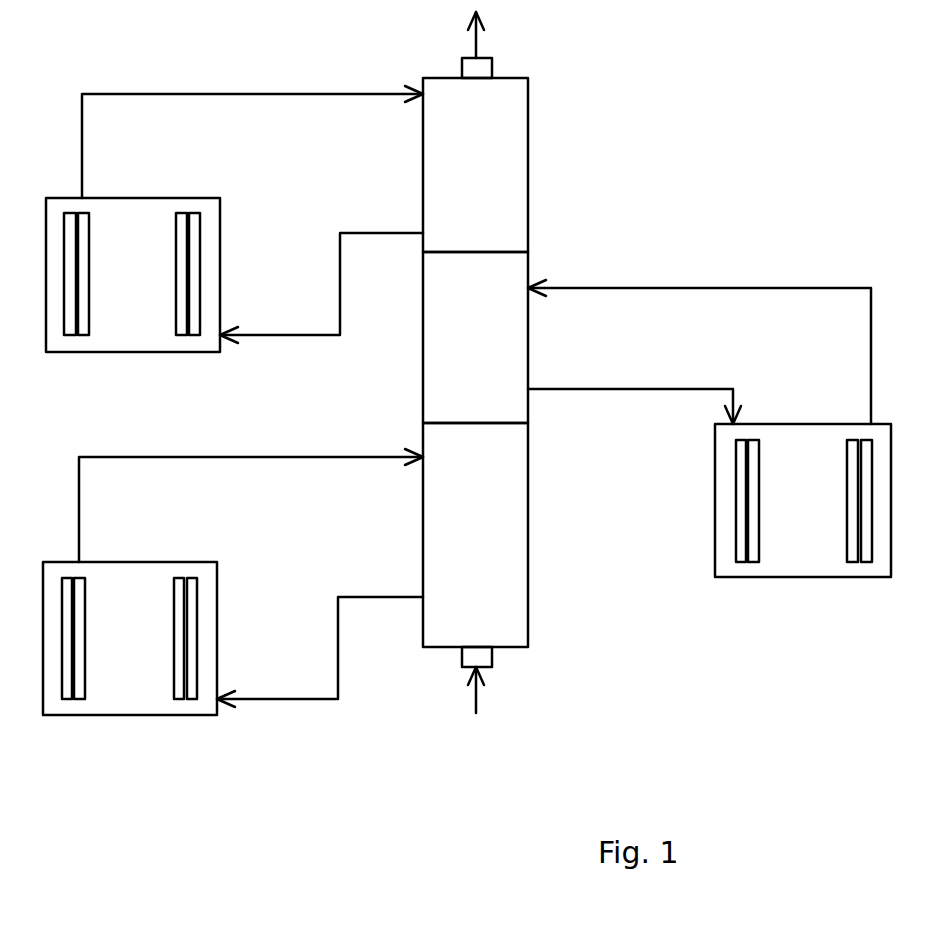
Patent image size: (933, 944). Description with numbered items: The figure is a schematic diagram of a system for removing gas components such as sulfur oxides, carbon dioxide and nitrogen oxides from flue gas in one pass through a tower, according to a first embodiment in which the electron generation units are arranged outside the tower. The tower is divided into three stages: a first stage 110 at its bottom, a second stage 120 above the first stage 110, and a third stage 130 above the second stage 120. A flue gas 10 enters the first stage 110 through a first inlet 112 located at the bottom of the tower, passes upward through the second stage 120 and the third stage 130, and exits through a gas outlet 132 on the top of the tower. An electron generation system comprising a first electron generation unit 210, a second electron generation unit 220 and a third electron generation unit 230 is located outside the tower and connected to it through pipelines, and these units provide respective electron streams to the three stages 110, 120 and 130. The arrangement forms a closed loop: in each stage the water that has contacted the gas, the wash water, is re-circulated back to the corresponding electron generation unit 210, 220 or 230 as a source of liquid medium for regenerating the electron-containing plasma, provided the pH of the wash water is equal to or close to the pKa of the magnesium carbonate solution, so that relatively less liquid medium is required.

The flue gas 10 is at (478, 711).
The first stage 110 is at (501, 583).
The first inlet 112 is at (492, 657).
The second stage 120 is at (463, 390).
The third stage 130 is at (508, 166).
The gas outlet 132 is at (492, 67).
The first electron generation unit 210 is at (146, 710).
The second electron generation unit 220 is at (840, 573).
The third electron generation unit 230 is at (122, 342).